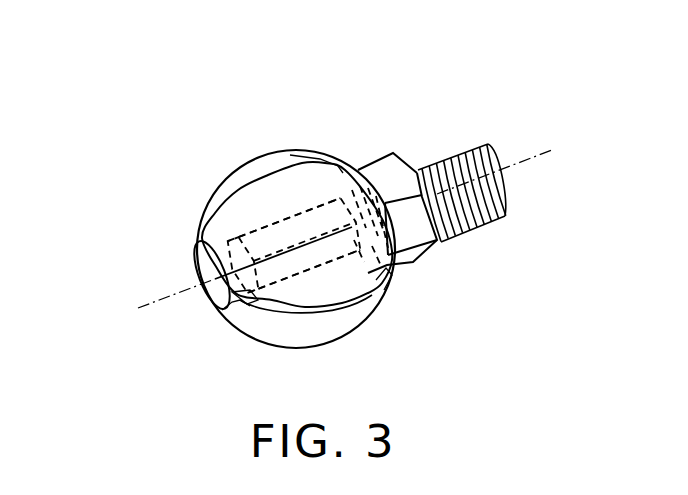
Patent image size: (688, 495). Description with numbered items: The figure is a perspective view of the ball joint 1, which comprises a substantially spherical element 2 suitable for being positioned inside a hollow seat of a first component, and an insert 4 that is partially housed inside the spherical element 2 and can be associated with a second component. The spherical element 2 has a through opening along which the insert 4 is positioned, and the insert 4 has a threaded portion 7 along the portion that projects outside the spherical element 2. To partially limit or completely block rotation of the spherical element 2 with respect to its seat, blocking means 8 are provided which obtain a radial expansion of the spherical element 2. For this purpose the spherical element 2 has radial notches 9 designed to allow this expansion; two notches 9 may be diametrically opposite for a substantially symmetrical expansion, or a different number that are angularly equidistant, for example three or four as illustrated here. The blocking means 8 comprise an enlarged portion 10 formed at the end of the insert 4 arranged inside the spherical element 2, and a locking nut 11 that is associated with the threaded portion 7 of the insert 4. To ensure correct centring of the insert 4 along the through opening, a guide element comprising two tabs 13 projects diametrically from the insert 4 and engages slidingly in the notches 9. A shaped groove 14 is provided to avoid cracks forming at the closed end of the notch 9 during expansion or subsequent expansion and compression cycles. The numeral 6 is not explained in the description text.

The joint 1 is at (92, 220).
The spherical element 2 is at (207, 208).
The insert 4 is at (320, 215).
The longitudinal axis 6 is at (550, 140).
The threaded portion 7 is at (455, 148).
The blocking means 8 is at (397, 116).
The notch 9 is at (297, 148).
The enlarged portion 10 is at (240, 300).
The locking nut 11 is at (417, 258).
The tabs 13 is at (257, 212).
The shaped groove 14 is at (382, 290).